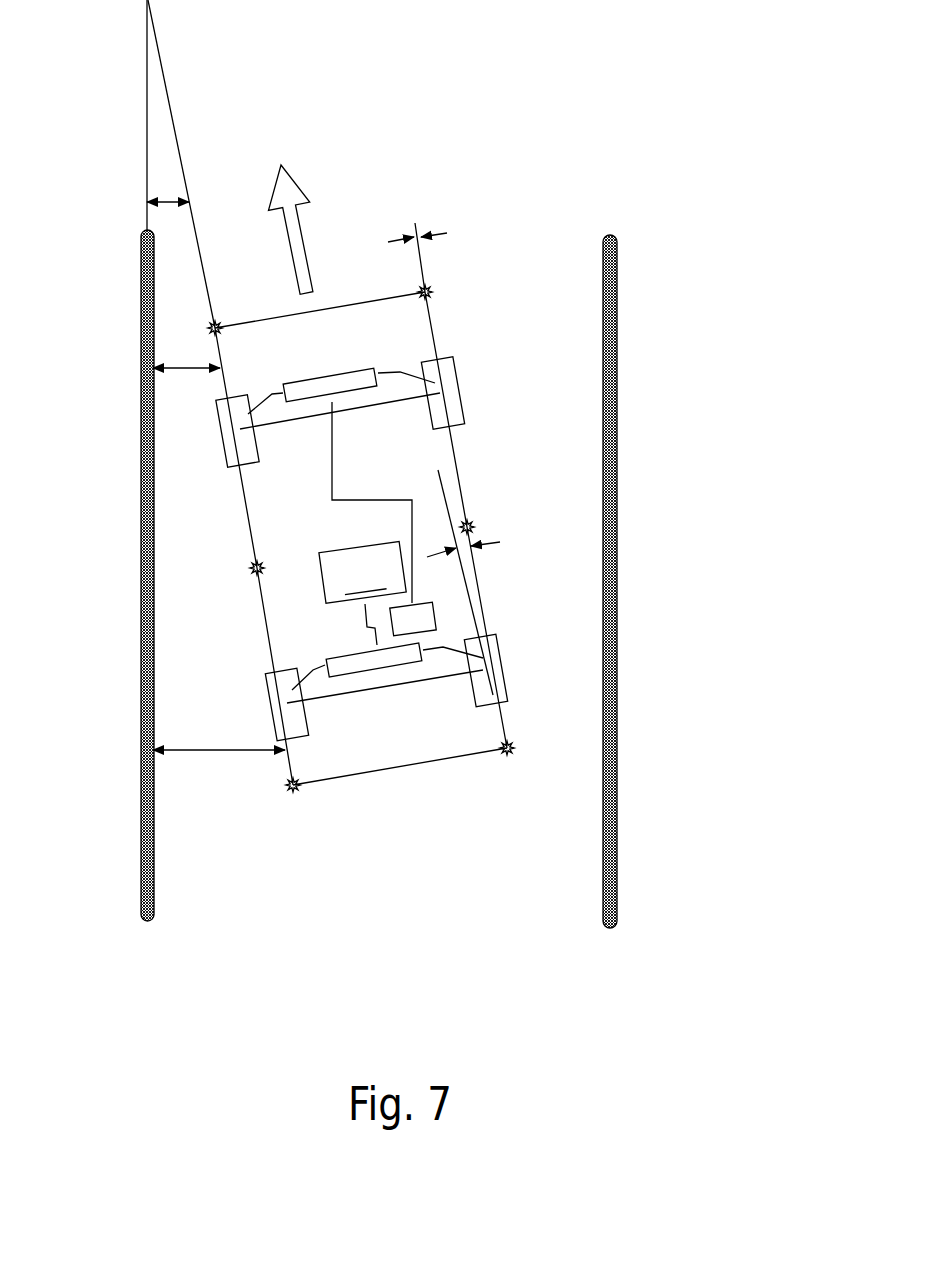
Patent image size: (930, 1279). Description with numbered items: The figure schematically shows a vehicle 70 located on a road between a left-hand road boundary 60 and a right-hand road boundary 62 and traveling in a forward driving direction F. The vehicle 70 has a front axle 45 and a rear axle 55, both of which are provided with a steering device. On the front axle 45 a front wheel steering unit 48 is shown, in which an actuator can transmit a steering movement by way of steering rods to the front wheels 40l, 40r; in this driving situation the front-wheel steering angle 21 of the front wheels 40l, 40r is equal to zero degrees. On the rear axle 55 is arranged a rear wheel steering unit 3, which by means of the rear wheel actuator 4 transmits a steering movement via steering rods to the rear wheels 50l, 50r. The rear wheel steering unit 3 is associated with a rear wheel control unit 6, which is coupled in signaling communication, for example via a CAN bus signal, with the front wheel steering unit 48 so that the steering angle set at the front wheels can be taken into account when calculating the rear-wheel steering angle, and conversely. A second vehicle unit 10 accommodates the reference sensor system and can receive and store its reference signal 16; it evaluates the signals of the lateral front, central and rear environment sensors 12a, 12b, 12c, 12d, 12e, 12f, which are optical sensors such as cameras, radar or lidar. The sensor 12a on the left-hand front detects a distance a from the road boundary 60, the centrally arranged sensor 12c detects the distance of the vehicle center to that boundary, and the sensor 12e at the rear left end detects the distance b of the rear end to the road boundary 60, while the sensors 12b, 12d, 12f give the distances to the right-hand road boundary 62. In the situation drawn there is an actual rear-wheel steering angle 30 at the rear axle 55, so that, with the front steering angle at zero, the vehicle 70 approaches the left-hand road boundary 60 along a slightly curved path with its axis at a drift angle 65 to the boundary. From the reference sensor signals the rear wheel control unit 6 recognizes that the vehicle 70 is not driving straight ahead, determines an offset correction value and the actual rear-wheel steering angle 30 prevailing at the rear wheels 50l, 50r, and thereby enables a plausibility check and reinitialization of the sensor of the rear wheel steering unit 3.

The rear wheel steering unit 3 is at (300, 636).
The rear wheel actuator 4 is at (325, 660).
The rear wheel control unit 6 is at (437, 617).
The second vehicle unit 10 is at (284, 539).
The reference signal 16 is at (363, 571).
The front left environment sensor 12a is at (210, 328).
The front right environment sensor 12b is at (430, 292).
The central left environment sensor 12c is at (252, 568).
The central right environment sensor 12d is at (470, 523).
The rear left environment sensor 12e is at (294, 791).
The rear right environment sensor 12f is at (507, 754).
The front-wheel steering angle 21 is at (447, 221).
The actual rear-wheel steering angle 30 is at (467, 553).
The left front wheel 40l is at (240, 444).
The right front wheel 40r is at (443, 407).
The front axle 45 is at (368, 407).
The front wheel steering unit 48 is at (338, 383).
The left rear wheel 50l is at (285, 725).
The right rear wheel 50r is at (488, 683).
The rear axle 55 is at (395, 687).
The left-hand road boundary 60 is at (141, 903).
The right-hand road boundary 62 is at (617, 905).
The drift angle 65 is at (157, 133).
The vehicle 70 is at (365, 802).
The forward driving direction F is at (306, 237).
The front distance a is at (183, 372).
The rear distance b is at (218, 753).